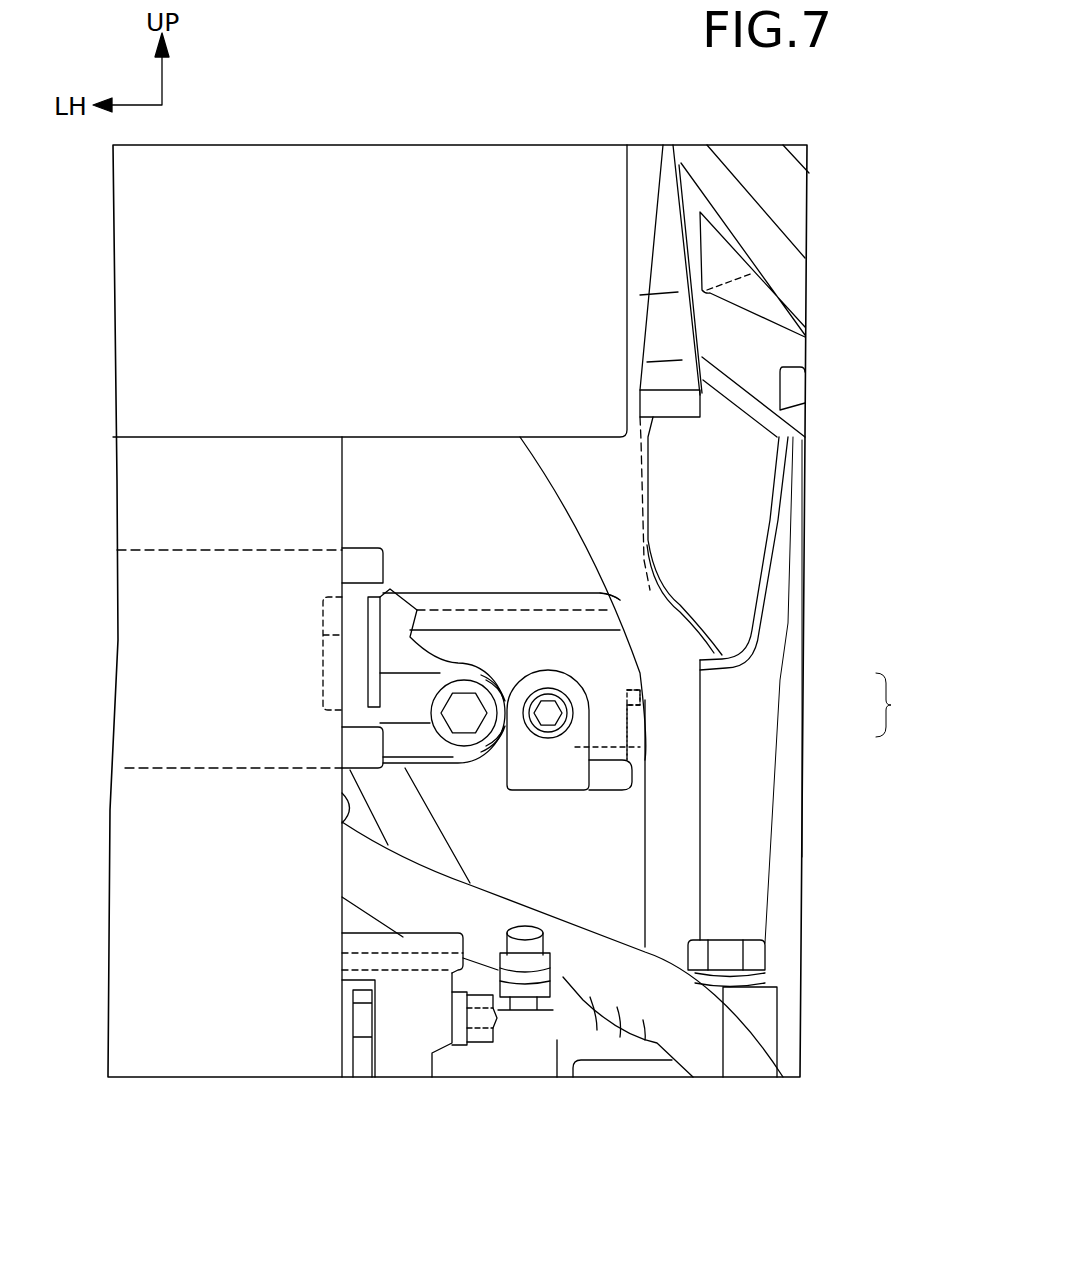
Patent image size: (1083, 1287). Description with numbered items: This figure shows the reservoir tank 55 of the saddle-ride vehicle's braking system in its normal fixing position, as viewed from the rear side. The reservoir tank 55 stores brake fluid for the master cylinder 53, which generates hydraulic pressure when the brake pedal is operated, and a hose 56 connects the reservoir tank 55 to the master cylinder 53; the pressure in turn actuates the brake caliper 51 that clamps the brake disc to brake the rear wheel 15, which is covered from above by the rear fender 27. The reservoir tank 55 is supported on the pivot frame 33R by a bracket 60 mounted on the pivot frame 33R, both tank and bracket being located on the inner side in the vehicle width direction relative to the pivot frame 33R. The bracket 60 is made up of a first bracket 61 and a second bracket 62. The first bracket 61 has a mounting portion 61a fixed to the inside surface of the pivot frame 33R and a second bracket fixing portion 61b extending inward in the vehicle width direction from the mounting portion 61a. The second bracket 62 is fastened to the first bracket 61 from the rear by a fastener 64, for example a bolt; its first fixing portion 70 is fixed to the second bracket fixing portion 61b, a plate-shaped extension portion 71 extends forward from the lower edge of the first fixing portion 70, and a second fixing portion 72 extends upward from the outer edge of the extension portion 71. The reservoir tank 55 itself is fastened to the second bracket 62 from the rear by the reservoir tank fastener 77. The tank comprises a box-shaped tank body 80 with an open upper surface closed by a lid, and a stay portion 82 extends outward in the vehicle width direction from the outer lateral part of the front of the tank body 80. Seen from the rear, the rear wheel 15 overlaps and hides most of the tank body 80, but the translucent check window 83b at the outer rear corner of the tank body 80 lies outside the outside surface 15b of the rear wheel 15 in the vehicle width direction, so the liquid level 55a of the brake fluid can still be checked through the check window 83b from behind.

The rear wheel 15 is at (188, 1060).
The outside surface of the rear wheel 15b is at (342, 828).
The rear fender 27 is at (610, 447).
The pivot frame 33R is at (757, 750).
The brake caliper 51 is at (467, 1065).
The master cylinder 53 is at (751, 1010).
The reservoir tank 55 is at (165, 549).
The liquid level 55a is at (360, 615).
The hose 56 is at (690, 1008).
The bracket 60 is at (901, 705).
The first bracket 61 is at (652, 695).
The mounting portion 61a is at (645, 698).
The second bracket fixing portion 61b is at (613, 653).
The second bracket 62 is at (591, 723).
The fastener 64 is at (557, 688).
The first fixing portion 70 is at (590, 757).
The extension portion 71 is at (549, 790).
The second fixing portion 72 is at (623, 733).
The reservoir tank fastener 77 is at (452, 748).
The tank body 80 is at (360, 748).
The stay portion 82 is at (410, 745).
The right check window 83b is at (357, 567).